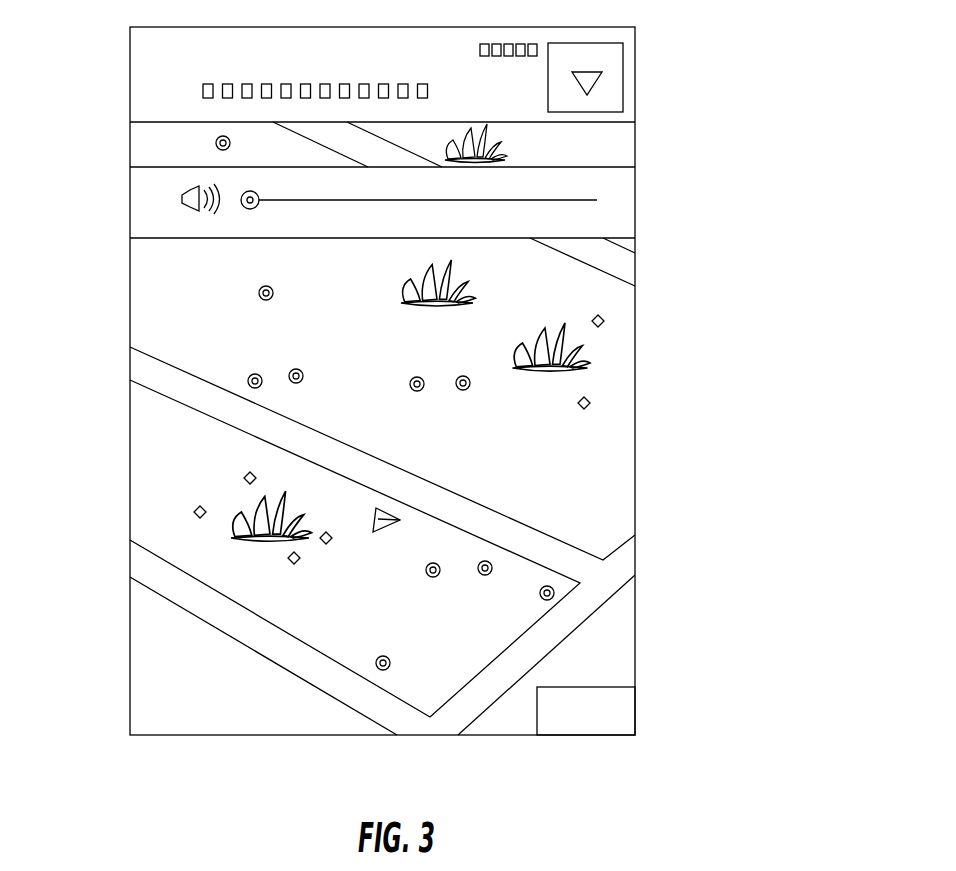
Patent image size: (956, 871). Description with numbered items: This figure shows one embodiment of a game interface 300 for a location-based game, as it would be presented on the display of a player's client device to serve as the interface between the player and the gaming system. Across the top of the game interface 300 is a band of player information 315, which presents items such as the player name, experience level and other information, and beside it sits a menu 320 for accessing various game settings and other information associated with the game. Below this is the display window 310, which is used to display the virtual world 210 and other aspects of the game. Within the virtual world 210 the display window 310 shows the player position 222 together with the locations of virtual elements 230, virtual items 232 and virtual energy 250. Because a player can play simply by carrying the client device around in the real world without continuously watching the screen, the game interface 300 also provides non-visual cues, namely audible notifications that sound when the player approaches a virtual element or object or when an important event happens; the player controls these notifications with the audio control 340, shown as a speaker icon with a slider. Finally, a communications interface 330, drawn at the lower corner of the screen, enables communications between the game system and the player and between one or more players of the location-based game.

The game interface 300 is at (735, 105).
The display window 310 is at (628, 150).
The player information 315 is at (140, 45).
The menu 320 is at (614, 80).
The communications interface 330 is at (630, 715).
The audio control 340 is at (140, 185).
The virtual world 210 is at (628, 461).
The player position 222 is at (378, 528).
The virtual elements 230 is at (512, 352).
The virtual items 232 is at (243, 478).
The virtual energy 250 is at (273, 296).